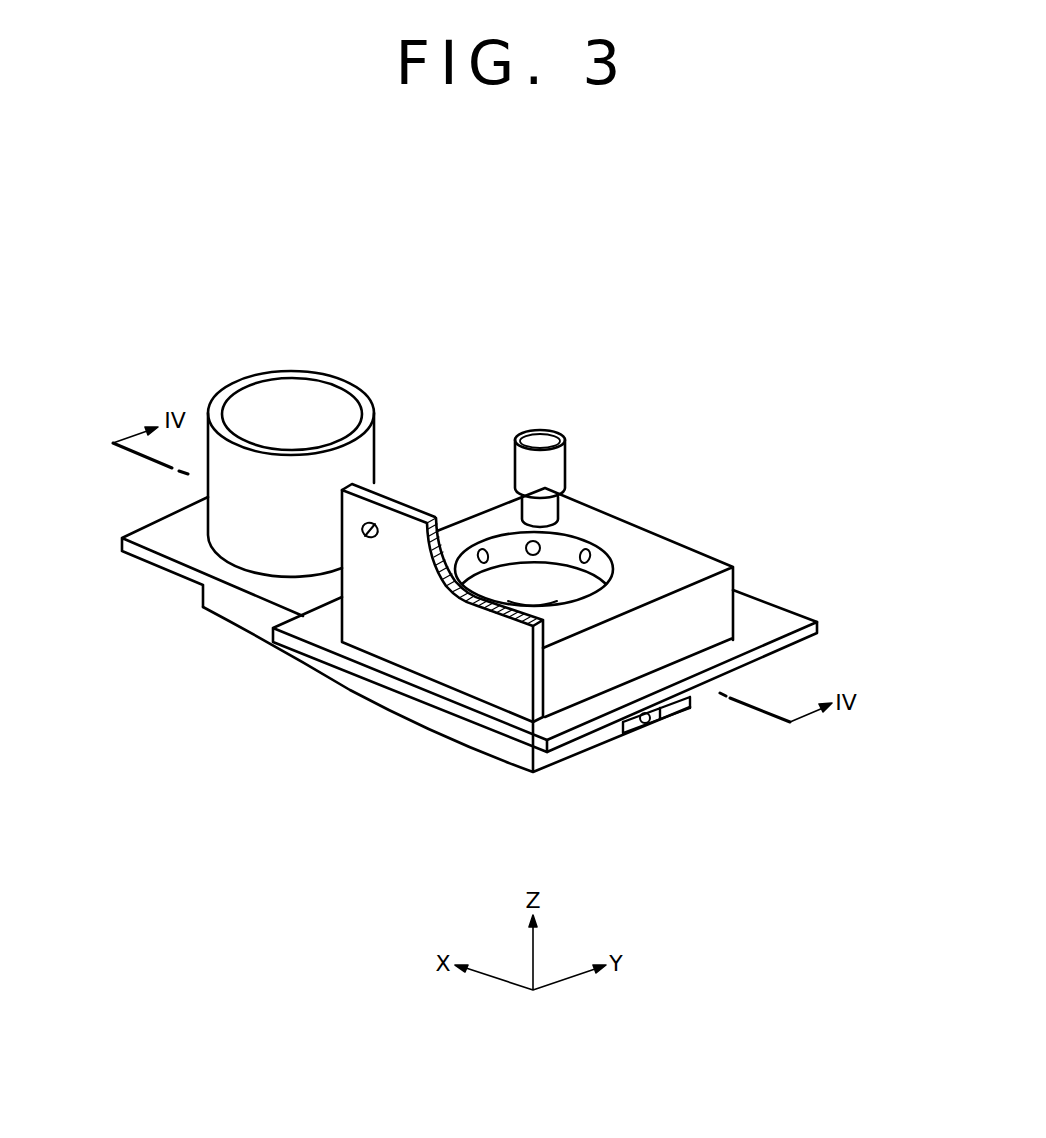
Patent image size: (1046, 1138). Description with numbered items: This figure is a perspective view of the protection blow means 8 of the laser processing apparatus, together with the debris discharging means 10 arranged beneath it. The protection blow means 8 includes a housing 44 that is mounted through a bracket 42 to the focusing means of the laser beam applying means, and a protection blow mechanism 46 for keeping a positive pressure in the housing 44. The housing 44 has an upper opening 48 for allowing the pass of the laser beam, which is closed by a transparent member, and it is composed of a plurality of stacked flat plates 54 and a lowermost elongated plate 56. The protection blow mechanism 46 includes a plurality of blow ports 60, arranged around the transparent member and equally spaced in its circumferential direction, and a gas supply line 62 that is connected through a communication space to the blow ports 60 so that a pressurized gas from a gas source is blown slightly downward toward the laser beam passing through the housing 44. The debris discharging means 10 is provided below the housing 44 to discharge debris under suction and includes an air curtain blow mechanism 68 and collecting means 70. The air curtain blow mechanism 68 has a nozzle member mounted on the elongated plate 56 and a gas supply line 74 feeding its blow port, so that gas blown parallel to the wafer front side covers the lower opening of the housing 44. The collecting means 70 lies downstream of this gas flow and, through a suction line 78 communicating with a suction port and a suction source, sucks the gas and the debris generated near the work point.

The protection blow means 8 is at (783, 570).
The debris discharging means 10 is at (296, 358).
The bracket 42 is at (370, 630).
The housing 44 is at (741, 622).
The protection blow mechanism 46 is at (568, 527).
The upper opening 48 is at (598, 574).
The stacked flat plates 54 is at (590, 680).
The lowermost elongated plate 56 is at (416, 717).
The blow ports 60 is at (590, 550).
The gas supply line 62 is at (540, 432).
The air curtain blow mechanism 68 is at (676, 710).
The collecting means 70 is at (333, 380).
The gas supply line 74 is at (647, 723).
The suction line 78 is at (283, 416).